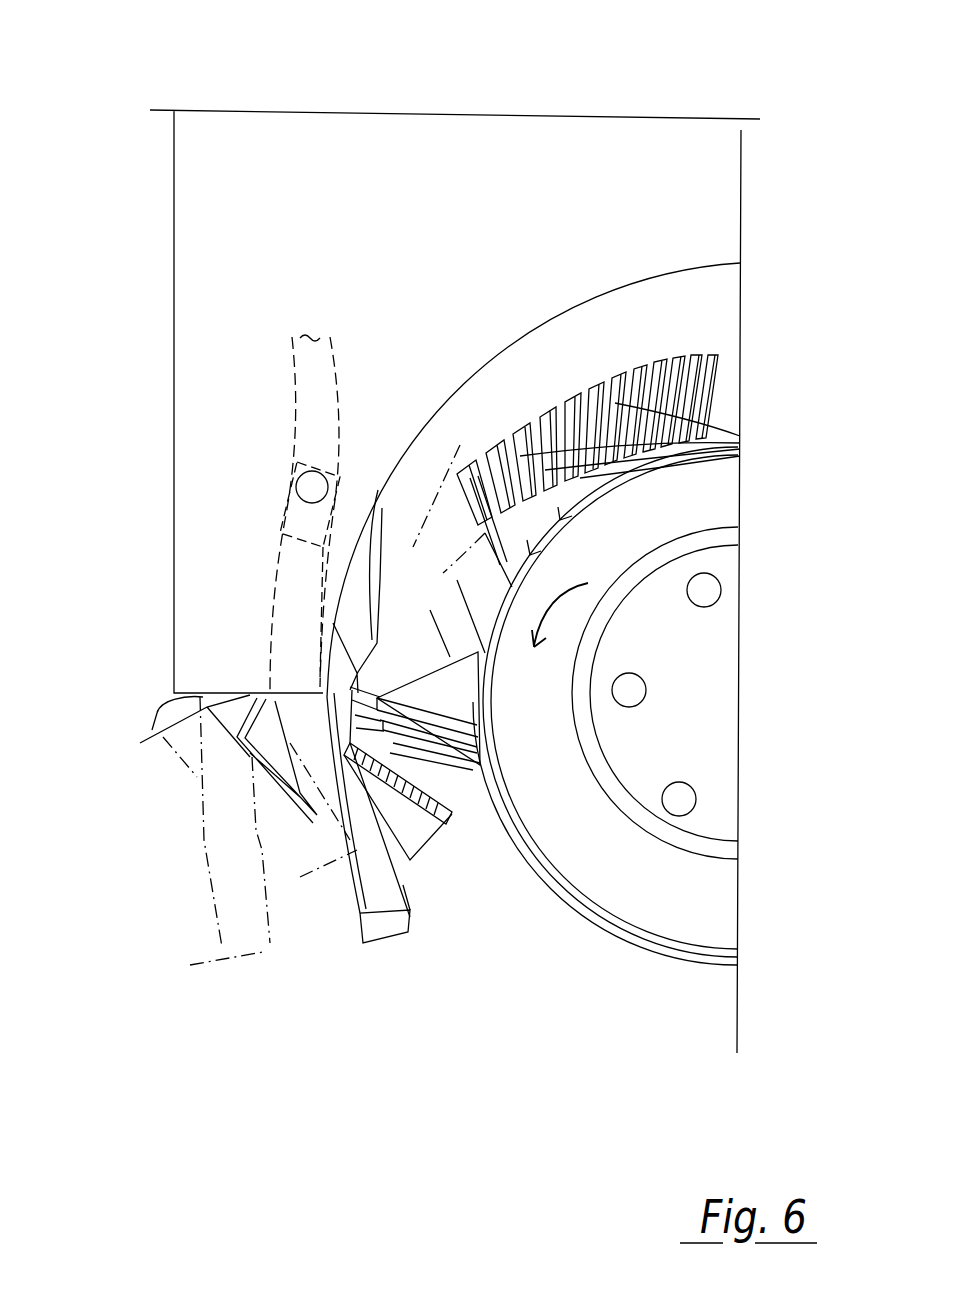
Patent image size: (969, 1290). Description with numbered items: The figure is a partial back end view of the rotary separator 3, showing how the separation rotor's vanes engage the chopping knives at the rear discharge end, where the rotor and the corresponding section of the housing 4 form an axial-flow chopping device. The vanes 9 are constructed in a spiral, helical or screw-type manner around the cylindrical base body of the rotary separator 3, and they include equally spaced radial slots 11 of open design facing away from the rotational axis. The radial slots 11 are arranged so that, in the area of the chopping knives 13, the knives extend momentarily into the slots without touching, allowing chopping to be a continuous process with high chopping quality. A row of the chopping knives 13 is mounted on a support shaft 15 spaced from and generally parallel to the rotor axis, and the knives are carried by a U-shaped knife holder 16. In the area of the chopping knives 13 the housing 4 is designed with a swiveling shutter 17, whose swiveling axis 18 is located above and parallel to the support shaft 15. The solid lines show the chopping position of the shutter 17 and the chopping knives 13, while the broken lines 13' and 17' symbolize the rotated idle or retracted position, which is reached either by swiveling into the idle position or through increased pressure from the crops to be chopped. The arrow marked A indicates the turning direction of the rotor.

The rotary separator 3 is at (693, 728).
The housing 4 is at (328, 114).
The vanes 9 is at (447, 467).
The radial slots 11 is at (740, 436).
The chopping knives 13 is at (432, 872).
The retracted position of the chopping knives 13' is at (289, 883).
The support shaft 15 is at (140, 743).
The knife holder 16 is at (237, 758).
The swiveling shutter 17 is at (351, 857).
The retracted position of the shutter 17' is at (192, 853).
The swiveling axis 18 is at (312, 487).